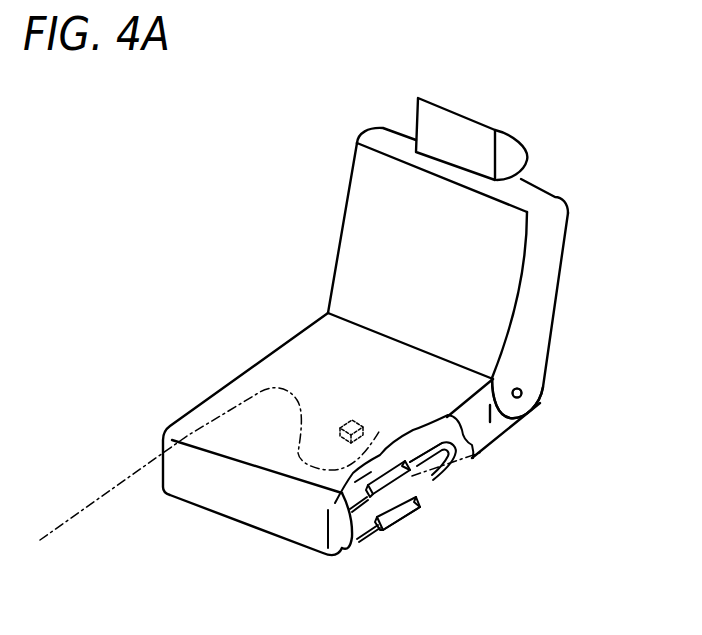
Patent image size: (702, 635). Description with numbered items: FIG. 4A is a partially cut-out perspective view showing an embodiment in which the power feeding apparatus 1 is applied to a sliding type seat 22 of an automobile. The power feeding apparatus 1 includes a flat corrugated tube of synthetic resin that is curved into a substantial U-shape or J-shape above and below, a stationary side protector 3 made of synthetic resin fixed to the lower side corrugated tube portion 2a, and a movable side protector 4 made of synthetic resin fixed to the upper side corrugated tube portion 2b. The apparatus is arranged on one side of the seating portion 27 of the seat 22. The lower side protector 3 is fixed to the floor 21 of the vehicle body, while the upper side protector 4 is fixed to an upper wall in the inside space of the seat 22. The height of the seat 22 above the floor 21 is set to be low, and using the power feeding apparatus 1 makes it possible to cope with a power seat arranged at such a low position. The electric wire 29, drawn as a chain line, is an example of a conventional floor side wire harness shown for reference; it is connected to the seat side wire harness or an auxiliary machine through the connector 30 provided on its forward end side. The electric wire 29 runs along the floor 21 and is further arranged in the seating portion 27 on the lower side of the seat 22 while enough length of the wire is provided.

The power feeding apparatus 1 is at (452, 506).
The lower side corrugated tube portion 2a is at (378, 525).
The upper side corrugated tube portion 2b is at (350, 508).
The stationary side protector 3 is at (406, 522).
The movable side protector 4 is at (374, 457).
The floor 21 is at (548, 543).
The sliding type seat 22 is at (566, 342).
The seating portion 27 is at (488, 423).
The electric wire 29 is at (115, 487).
The connector 30 is at (352, 416).